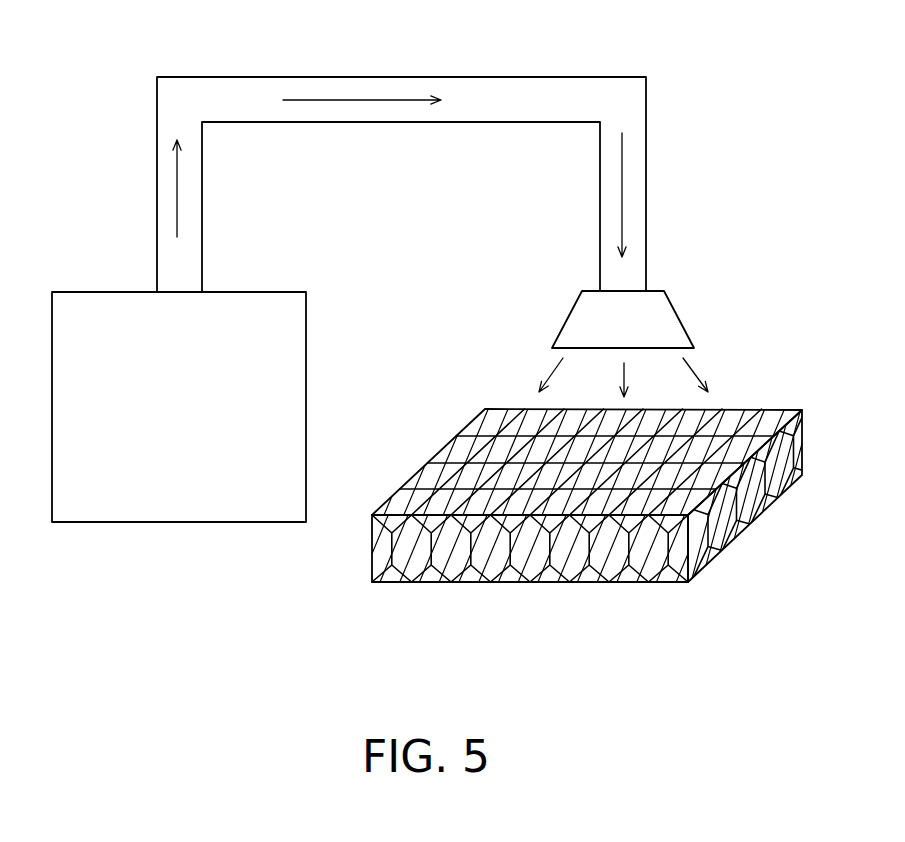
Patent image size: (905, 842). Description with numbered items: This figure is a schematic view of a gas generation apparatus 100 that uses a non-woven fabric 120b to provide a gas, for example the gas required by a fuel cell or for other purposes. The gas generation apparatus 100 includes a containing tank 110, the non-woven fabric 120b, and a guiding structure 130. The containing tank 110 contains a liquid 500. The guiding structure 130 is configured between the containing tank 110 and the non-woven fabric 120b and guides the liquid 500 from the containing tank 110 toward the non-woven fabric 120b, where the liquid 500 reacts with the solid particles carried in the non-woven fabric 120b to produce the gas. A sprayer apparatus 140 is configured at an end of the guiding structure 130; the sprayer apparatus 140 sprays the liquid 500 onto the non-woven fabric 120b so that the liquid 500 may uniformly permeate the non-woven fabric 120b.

The gas generation apparatus 100 is at (448, 344).
The containing tank 110 is at (138, 470).
The non-woven fabric 120b is at (643, 552).
The guiding structure 130 is at (520, 90).
The sprayer apparatus 140 is at (663, 322).
The liquid 500 is at (387, 302).